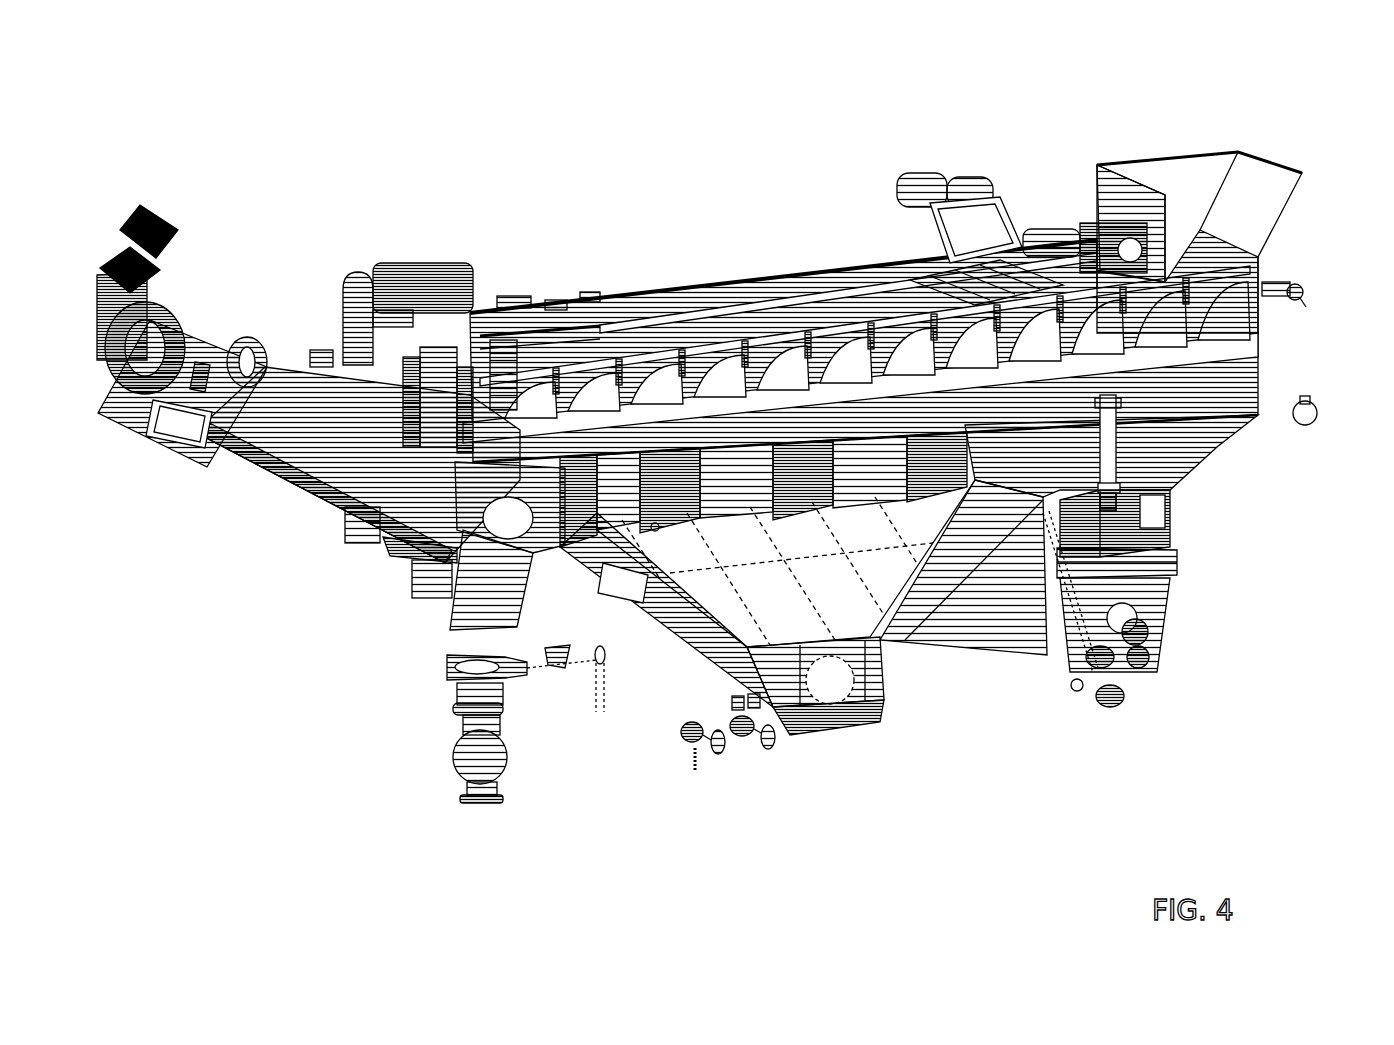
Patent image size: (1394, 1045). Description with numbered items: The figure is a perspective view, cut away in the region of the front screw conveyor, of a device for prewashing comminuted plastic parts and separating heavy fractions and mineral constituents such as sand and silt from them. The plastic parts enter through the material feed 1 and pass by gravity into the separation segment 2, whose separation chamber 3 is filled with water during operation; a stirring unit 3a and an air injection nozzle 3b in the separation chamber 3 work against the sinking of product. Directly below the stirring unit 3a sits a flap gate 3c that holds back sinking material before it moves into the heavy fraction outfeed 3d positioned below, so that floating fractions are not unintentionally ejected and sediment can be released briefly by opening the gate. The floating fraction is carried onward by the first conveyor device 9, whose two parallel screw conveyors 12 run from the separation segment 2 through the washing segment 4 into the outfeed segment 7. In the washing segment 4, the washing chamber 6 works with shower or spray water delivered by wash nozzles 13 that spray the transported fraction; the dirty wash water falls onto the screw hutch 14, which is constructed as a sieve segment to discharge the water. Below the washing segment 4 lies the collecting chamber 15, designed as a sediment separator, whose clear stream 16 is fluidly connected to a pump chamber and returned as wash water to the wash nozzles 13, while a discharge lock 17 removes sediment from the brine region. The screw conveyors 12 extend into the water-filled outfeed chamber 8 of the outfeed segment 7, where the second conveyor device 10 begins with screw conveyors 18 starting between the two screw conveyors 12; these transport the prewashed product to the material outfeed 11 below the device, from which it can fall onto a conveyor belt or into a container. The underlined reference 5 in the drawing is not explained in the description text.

The material feed 1 is at (1267, 162).
The separation segment 2 is at (1245, 273).
The separation chamber 3 is at (1207, 297).
The stirring unit 3a is at (1117, 423).
The air injection nozzle 3b is at (1120, 513).
The flap gate 3c is at (1122, 567).
The heavy fraction outfeed 3d is at (1106, 718).
The washing segment 4 is at (763, 489).
The collecting funnel 5 is at (855, 550).
The washing chamber 6 is at (751, 492).
The outfeed segment 7 is at (515, 546).
The outfeed chamber 8 is at (494, 583).
The first conveyor device 9 is at (860, 338).
The second conveyor device 10 is at (303, 447).
The material outfeed 11 is at (210, 457).
The screw conveyor 12 is at (653, 430).
The wash nozzle 13 is at (597, 380).
The screw hutch 14 is at (712, 380).
The collecting chamber 15 is at (937, 587).
The clear stream 16 is at (735, 698).
The discharge lock 17 is at (788, 760).
The screw conveyor 18 is at (497, 528).